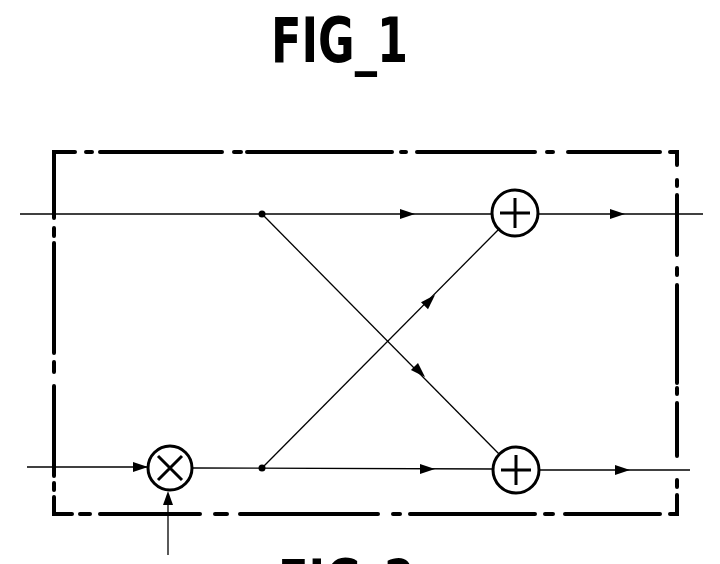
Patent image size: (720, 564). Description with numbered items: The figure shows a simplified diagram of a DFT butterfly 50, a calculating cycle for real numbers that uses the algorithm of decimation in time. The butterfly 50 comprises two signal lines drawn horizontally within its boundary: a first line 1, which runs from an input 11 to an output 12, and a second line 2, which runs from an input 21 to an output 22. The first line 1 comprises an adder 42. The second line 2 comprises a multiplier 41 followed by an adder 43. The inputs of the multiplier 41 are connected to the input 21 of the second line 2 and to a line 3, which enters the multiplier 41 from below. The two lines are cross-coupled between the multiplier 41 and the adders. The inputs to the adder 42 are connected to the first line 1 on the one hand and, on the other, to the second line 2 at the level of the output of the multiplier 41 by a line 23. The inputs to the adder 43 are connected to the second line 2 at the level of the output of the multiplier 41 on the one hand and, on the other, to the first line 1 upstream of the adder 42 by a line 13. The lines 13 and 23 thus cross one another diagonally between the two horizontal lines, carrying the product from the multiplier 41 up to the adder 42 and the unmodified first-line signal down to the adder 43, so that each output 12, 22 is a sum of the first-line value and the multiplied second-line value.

The first line 1 is at (315, 207).
The second line 2 is at (361, 460).
The line 3 is at (165, 543).
The input 11 is at (198, 213).
The output 12 is at (585, 213).
The line 13 is at (353, 305).
The input 21 is at (85, 466).
The output 22 is at (575, 470).
The line 23 is at (468, 262).
The multiplier 41 is at (168, 446).
The adder 42 is at (495, 200).
The adder 43 is at (513, 447).
The DFT butterfly 50 is at (600, 148).